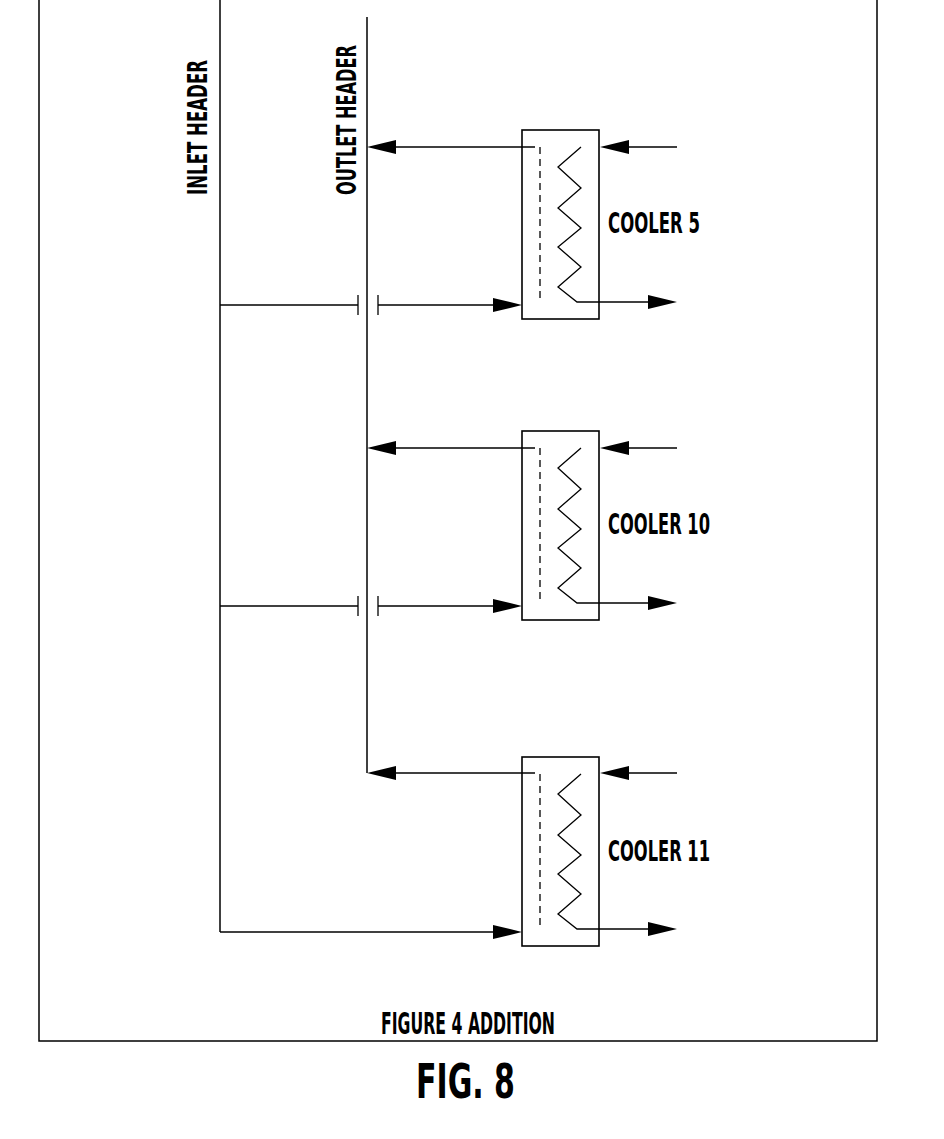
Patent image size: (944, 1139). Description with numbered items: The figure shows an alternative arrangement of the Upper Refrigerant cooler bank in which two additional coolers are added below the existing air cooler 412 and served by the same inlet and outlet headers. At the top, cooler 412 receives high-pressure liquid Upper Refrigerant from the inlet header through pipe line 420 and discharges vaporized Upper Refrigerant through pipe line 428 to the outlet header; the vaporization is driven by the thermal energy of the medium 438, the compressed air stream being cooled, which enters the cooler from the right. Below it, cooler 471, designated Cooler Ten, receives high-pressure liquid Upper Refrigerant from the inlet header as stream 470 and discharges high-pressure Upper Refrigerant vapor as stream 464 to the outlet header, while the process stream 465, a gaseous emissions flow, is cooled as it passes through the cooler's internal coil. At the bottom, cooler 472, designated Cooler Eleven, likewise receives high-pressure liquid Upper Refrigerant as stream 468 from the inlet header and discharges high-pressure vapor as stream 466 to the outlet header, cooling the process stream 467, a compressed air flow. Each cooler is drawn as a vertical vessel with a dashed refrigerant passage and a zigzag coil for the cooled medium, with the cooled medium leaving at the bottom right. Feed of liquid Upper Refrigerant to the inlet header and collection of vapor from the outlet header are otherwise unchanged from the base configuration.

The cooler 412 is at (565, 130).
The pipe line 428 is at (430, 147).
The medium 438 is at (640, 175).
The pipe line 420 is at (417, 305).
The cooler 471 is at (565, 431).
The stream 464 is at (438, 448).
The stream 465 is at (640, 477).
The stream 470 is at (433, 606).
The cooler 472 is at (560, 757).
The stream 466 is at (443, 773).
The stream 467 is at (640, 800).
The stream 468 is at (415, 932).